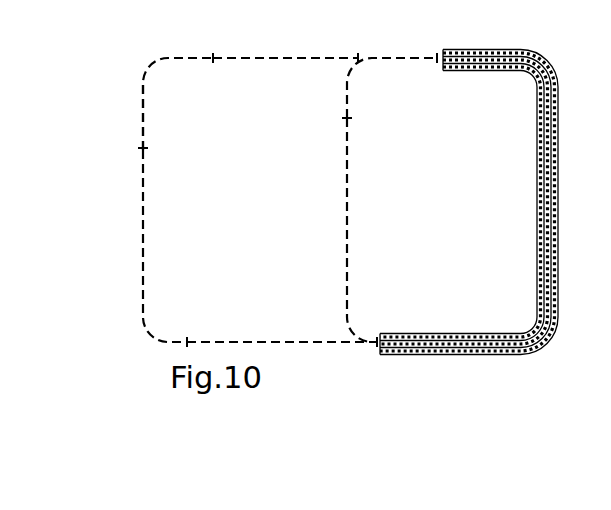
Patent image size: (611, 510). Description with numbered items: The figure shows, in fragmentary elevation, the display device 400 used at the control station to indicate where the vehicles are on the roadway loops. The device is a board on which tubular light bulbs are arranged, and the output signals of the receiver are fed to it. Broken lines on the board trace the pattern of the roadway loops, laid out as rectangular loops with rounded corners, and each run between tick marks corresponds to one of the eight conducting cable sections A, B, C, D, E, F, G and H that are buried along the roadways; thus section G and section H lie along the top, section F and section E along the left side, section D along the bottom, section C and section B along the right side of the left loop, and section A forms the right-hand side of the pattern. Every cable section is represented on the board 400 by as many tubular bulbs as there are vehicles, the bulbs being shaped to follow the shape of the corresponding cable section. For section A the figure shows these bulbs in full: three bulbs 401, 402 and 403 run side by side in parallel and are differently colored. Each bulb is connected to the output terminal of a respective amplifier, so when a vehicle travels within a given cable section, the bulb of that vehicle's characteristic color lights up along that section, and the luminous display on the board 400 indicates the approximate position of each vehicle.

The display device 400 is at (482, 216).
The light bulb 401 is at (538, 115).
The light bulb 402 is at (541, 139).
The light bulb 403 is at (545, 164).
The cable section A is at (568, 204).
The cable section B is at (350, 230).
The cable section C is at (383, 88).
The cable section D is at (282, 357).
The cable section E is at (154, 246).
The cable section F is at (133, 116).
The cable section G is at (201, 91).
The cable section H is at (285, 47).